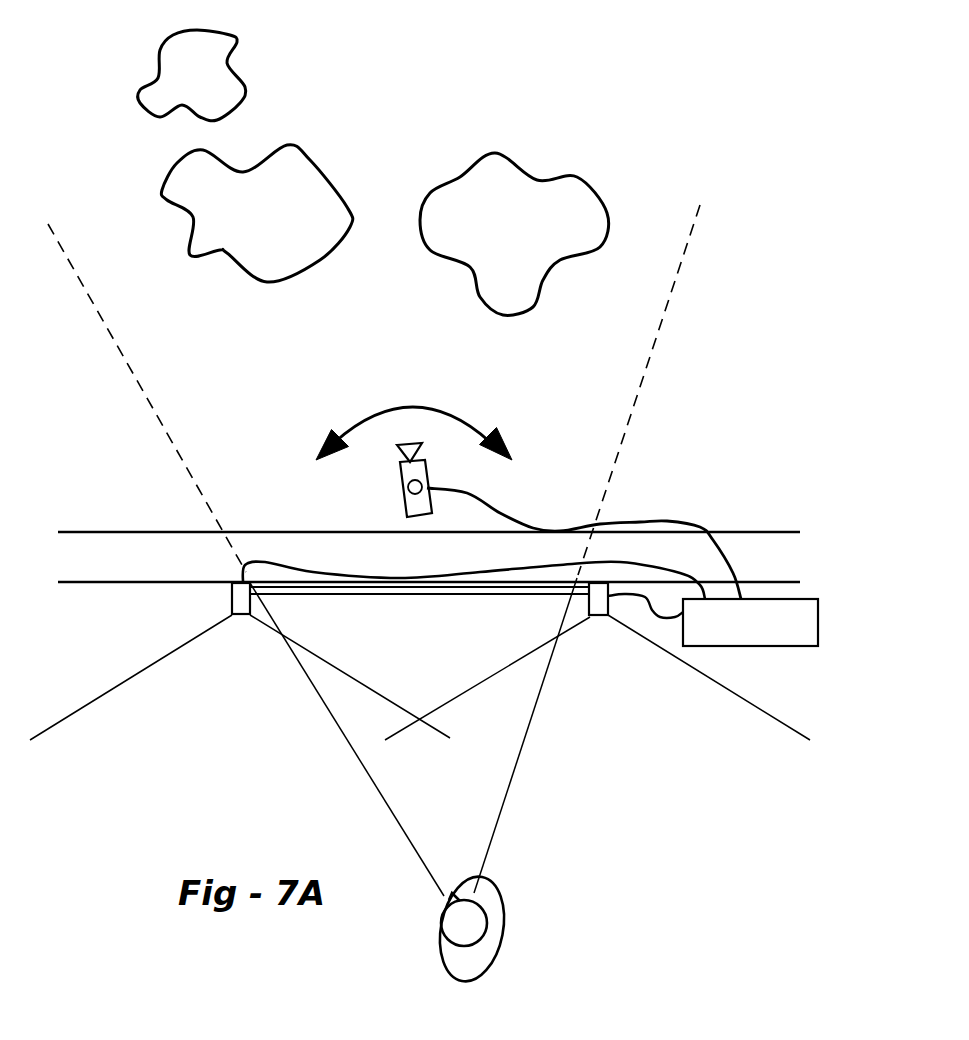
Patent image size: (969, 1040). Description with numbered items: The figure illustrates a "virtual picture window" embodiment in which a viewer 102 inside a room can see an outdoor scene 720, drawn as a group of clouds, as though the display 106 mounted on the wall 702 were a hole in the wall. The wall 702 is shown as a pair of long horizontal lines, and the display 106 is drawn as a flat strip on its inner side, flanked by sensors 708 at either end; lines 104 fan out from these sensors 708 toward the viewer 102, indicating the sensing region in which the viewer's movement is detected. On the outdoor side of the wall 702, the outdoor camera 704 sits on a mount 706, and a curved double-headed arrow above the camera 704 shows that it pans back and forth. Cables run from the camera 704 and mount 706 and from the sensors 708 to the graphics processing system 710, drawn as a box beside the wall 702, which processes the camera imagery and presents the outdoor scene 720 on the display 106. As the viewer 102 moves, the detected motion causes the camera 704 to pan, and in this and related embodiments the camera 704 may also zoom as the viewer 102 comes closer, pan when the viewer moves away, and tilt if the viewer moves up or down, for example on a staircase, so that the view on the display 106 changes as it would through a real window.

The outdoor scene 720 is at (373, 172).
The wall 702 is at (429, 557).
The outdoor camera 704 is at (386, 480).
The mount 706 is at (408, 496).
The display 106 is at (419, 611).
The sensors 708 is at (240, 600).
The graphics processing system 710 is at (750, 622).
The sensor field lines 104 is at (413, 737).
The viewer 102 is at (496, 929).